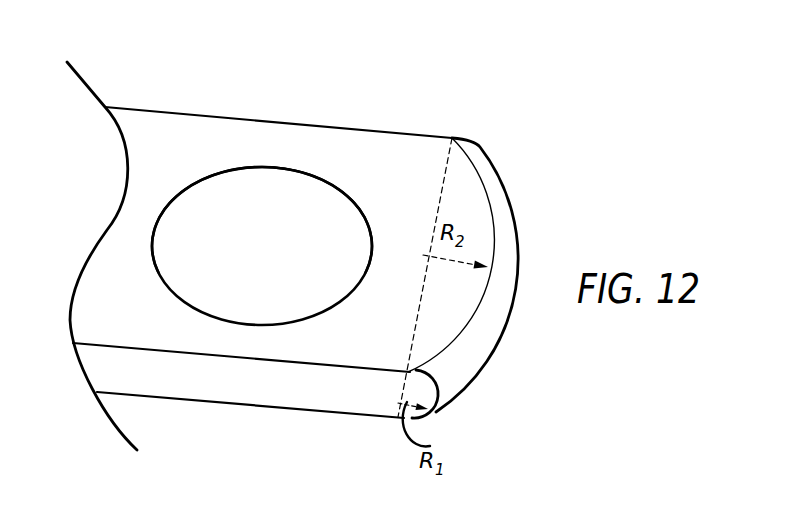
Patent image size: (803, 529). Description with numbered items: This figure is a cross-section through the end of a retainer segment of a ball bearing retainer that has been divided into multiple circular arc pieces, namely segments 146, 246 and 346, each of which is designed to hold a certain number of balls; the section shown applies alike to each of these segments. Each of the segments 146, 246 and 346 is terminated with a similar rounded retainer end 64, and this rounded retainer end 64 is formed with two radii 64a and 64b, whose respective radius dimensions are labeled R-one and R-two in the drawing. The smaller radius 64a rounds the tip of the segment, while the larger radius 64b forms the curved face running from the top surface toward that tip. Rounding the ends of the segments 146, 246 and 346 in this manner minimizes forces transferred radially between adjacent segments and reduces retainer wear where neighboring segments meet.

The retainer segment 146 is at (259, 256).
The retainer segment 246 is at (259, 256).
The retainer segment 346 is at (190, 143).
The rounded retainer end 64 is at (454, 293).
The first radius of rounded retainer end 64a is at (408, 390).
The second radius of rounded retainer end 64b is at (463, 353).